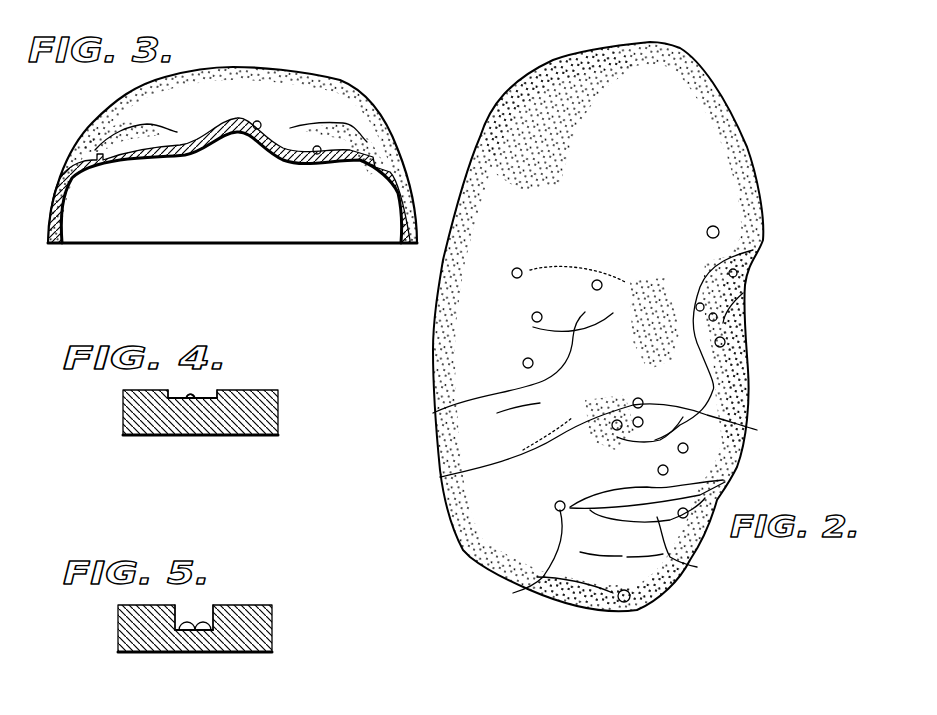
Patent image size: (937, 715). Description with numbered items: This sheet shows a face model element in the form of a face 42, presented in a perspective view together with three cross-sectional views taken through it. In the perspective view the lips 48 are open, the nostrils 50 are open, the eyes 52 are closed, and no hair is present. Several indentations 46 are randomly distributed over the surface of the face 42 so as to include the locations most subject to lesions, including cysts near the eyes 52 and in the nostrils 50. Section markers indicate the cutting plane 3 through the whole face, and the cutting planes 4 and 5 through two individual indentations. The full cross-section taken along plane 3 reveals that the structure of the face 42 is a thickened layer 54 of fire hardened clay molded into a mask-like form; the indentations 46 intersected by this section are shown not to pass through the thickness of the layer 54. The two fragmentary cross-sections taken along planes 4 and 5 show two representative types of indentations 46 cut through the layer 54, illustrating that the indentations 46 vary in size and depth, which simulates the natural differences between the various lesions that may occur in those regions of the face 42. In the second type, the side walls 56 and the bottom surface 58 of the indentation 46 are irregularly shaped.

In FIG. 3, the face 42 is at (282, 73).
In FIG. 2, the face 42 is at (762, 145).
In FIG. 3, the indentations 46 is at (260, 123).
In FIG. 4, the indentations 46 is at (215, 390).
In FIG. 5, the indentations 46 is at (192, 615).
In FIG. 2, the indentations 46 is at (592, 286).
In FIG. 2, the lips 48 is at (697, 567).
In FIG. 2, the nostrils 50 is at (440, 477).
In FIG. 3, the eyes 52 is at (153, 123).
In FIG. 2, the eyes 52 is at (433, 413).
In FIG. 3, the layer 54 is at (48, 236).
In FIG. 4, the layer 54 is at (254, 436).
In FIG. 5, the layer 54 is at (247, 652).
In FIG. 4, the side walls 56 is at (168, 391).
In FIG. 5, the side walls 56 is at (198, 636).
In FIG. 4, the bottom surface 58 is at (196, 399).
In FIG. 5, the bottom surface 58 is at (183, 633).
In FIG. 2, the plane 3- 3 is at (353, 363).
In FIG. 2, the plane 4- 4 is at (477, 277).
In FIG. 2, the plane 5- 5 is at (687, 247).